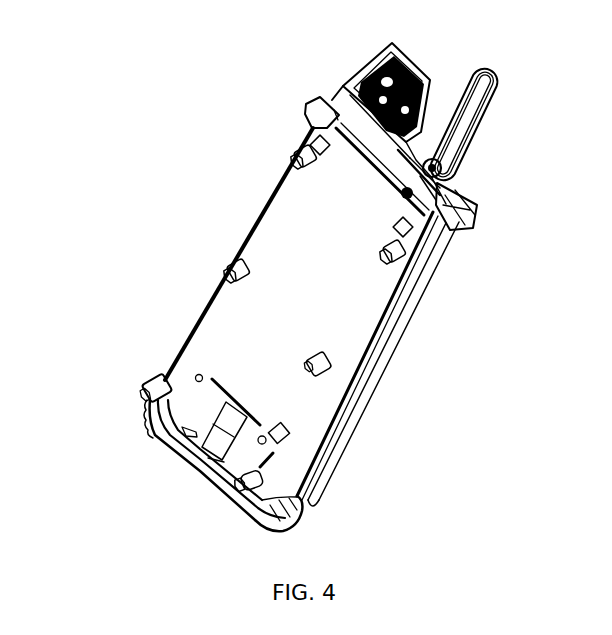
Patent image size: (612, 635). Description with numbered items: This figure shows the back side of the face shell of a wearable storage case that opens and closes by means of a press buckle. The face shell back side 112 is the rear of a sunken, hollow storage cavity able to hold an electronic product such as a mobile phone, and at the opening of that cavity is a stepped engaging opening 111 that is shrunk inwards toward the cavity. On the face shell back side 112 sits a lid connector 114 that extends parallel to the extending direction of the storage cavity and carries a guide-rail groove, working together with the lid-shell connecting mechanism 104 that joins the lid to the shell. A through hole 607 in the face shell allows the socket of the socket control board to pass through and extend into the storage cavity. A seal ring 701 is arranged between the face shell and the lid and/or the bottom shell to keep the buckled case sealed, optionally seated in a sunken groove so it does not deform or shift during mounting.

The lid-shell connecting mechanism 104 is at (360, 120).
The lid connector 114 is at (490, 114).
The stepped engaging opening 111 is at (470, 223).
The seal ring 701 is at (378, 320).
The face shell back side 112 is at (300, 191).
The through hole 607 is at (247, 420).